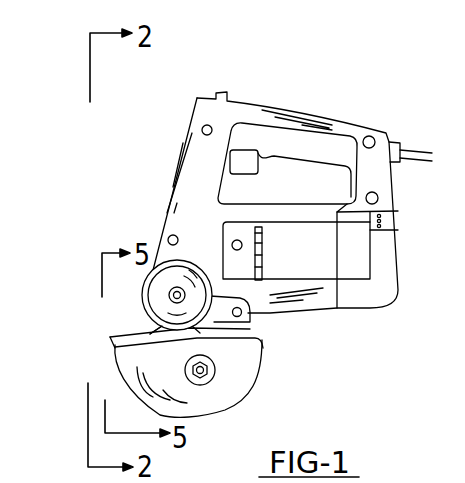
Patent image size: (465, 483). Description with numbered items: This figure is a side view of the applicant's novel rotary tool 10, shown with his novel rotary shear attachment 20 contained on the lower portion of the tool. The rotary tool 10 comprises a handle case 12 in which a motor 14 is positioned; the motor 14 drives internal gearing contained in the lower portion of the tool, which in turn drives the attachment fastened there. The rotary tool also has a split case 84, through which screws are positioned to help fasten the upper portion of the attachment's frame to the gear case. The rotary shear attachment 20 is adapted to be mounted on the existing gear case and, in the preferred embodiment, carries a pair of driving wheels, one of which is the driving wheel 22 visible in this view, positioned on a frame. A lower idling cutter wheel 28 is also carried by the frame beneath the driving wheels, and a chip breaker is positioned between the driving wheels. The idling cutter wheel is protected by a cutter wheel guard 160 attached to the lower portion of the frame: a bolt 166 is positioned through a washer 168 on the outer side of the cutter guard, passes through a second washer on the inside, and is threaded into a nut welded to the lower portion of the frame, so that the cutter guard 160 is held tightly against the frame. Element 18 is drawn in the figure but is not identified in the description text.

The rotary tool 10 is at (314, 70).
The handle case 12 is at (343, 130).
The motor 14 is at (320, 263).
The drive wheel 18 is at (172, 295).
The rotary shear attachment 20 is at (81, 286).
The driving wheel 22 is at (160, 308).
The lower idling cutter wheel 28 is at (250, 330).
The split case 84 is at (197, 193).
The cutter wheel guard 160 is at (222, 397).
The bolt 166 is at (207, 372).
The washer 168 is at (200, 413).